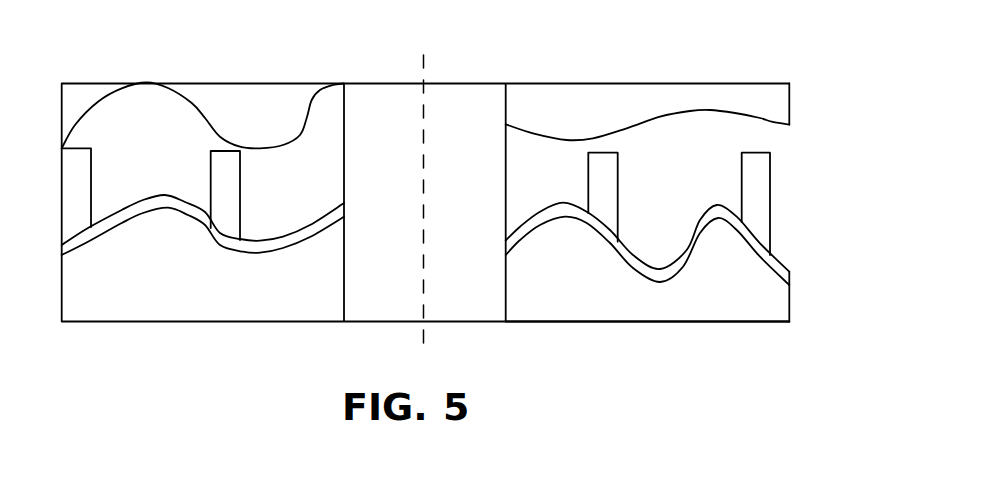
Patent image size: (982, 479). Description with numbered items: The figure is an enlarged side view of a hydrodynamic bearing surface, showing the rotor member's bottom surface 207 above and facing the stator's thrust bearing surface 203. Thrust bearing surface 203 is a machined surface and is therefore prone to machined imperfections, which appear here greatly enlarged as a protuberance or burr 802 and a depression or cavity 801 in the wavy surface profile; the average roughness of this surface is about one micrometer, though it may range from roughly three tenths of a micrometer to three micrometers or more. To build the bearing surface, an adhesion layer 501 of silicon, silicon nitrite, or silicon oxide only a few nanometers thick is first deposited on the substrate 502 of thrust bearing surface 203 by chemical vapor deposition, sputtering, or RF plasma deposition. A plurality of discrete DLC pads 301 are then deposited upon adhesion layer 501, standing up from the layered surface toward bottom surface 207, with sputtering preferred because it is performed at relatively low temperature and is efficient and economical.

The thrust bearing surface 203 is at (678, 280).
The bottom surface 207 is at (770, 122).
The DLC pads 301 is at (773, 193).
The adhesion layer 501 is at (782, 262).
The substrate 502 is at (777, 308).
The cavity 801 is at (253, 253).
The burr 802 is at (155, 209).